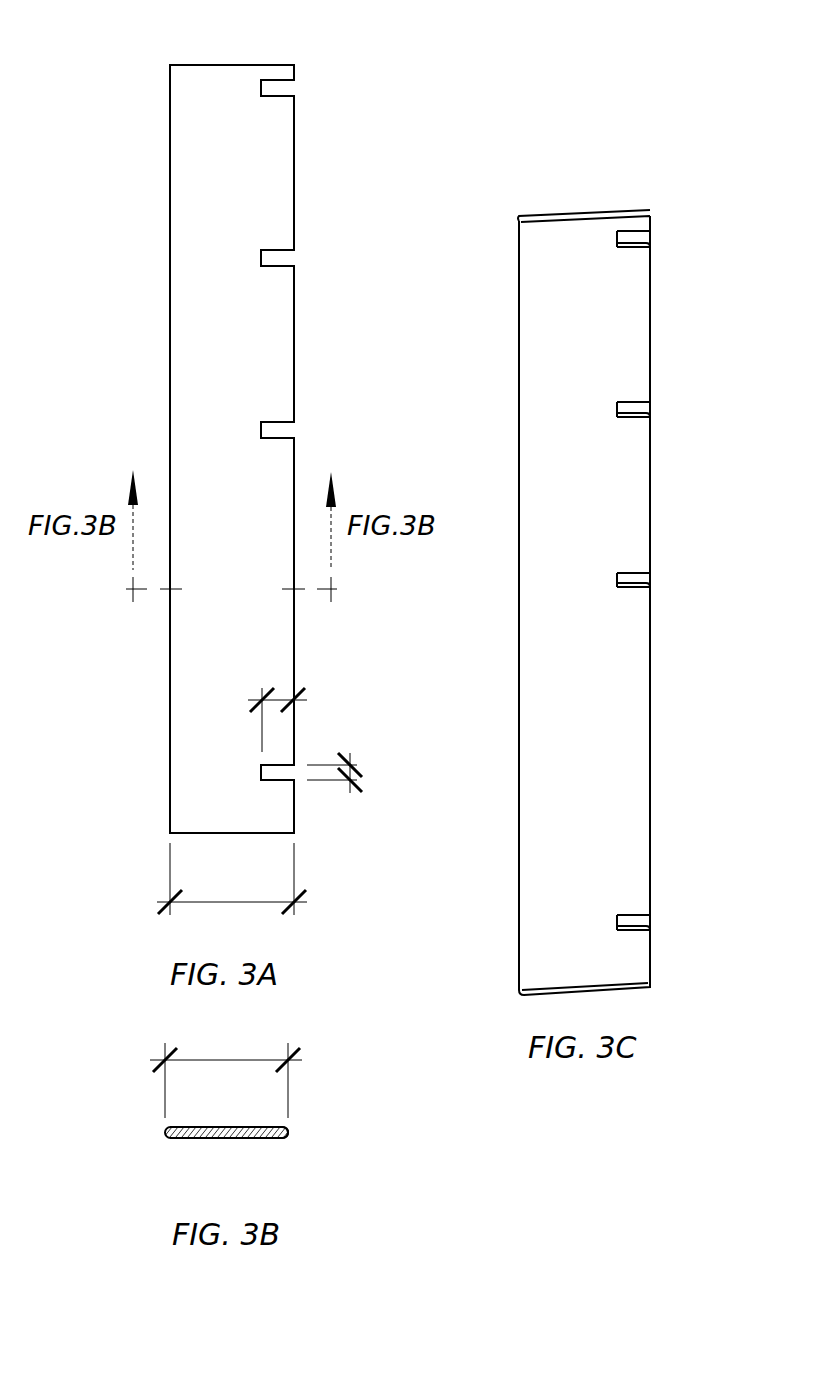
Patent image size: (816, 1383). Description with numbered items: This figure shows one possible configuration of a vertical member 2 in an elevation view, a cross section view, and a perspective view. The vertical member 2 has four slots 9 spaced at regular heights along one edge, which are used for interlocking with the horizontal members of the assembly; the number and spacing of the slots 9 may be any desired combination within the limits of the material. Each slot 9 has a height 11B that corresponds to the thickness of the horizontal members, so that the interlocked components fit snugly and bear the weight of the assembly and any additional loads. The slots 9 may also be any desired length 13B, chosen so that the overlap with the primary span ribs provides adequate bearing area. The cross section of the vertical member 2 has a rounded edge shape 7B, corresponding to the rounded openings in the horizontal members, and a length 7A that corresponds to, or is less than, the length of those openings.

In FIG. 3A, the vertical member 2 is at (232, 65).
In FIG. 3B, the vertical member 2 is at (207, 1138).
In FIG. 3C, the vertical member 2 is at (582, 212).
In FIG. 3A, the slot 9 is at (278, 422).
In FIG. 3C, the slot 9 is at (630, 573).
In FIG. 3A, the length of the cross section shape 7A is at (250, 905).
In FIG. 3B, the length of the cross section shape 7A is at (252, 1060).
In FIG. 3B, the cross section shape 7B is at (282, 1138).
In FIG. 3A, the height of the slot 11B is at (350, 763).
In FIG. 3A, the length of slot 13B is at (278, 700).